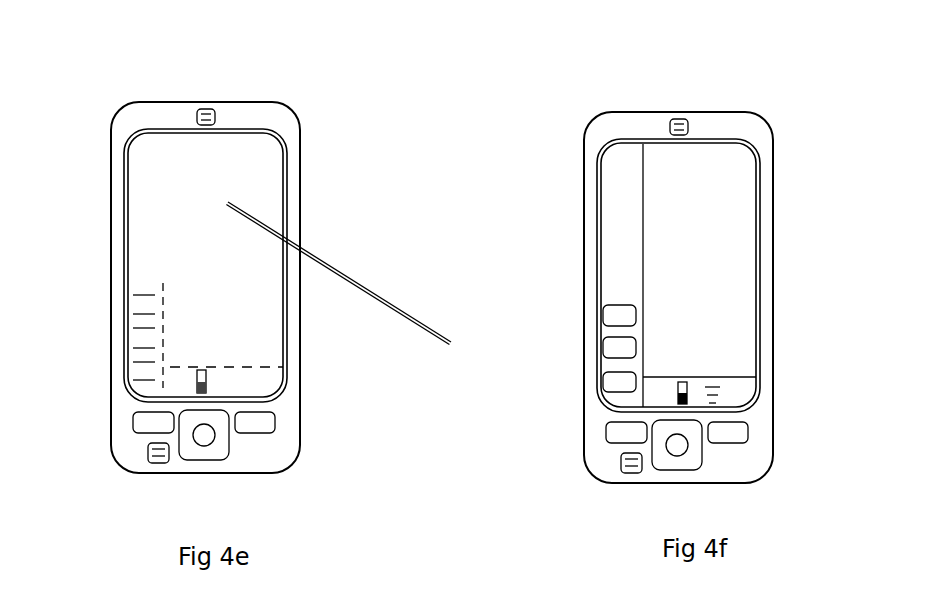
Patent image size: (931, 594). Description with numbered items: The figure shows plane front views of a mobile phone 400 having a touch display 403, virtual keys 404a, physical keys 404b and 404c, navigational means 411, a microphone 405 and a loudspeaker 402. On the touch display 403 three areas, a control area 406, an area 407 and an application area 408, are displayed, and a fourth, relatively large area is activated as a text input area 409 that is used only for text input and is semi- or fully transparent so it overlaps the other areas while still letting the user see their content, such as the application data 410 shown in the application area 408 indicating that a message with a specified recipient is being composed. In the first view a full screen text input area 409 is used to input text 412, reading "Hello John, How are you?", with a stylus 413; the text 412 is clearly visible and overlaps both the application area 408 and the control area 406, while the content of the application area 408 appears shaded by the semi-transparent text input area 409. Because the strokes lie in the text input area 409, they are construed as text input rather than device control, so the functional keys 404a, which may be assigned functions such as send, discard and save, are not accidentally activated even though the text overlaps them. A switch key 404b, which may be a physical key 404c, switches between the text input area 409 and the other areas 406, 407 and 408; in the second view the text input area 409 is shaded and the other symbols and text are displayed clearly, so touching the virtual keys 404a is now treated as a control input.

In FIG. 4E, the mobile phone 400 is at (167, 86).
In FIG. 4F, the mobile phone 400 is at (648, 252).
In FIG. 4E, the loudspeaker 402 is at (205, 107).
In FIG. 4F, the loudspeaker 402 is at (669, 103).
In FIG. 4E, the touch display 403 is at (288, 205).
In FIG. 4F, the touch display 403 is at (715, 275).
In FIG. 4E, the virtual keys 404a is at (124, 310).
In FIG. 4F, the virtual keys 404a is at (570, 348).
In FIG. 4E, the switch key 404b is at (133, 423).
In FIG. 4F, the switch key 404b is at (577, 429).
In FIG. 4E, the physical key 404c is at (275, 428).
In FIG. 4F, the physical key 404c is at (767, 441).
In FIG. 4E, the microphone 405 is at (153, 465).
In FIG. 4F, the microphone 405 is at (605, 497).
In FIG. 4E, the control area 406 is at (124, 255).
In FIG. 4F, the control area 406 is at (627, 275).
In FIG. 4E, the area 407 is at (253, 399).
In FIG. 4F, the area 407 is at (734, 403).
In FIG. 4E, the application area 408 is at (287, 272).
In FIG. 4F, the application area 408 is at (732, 253).
In FIG. 4E, the text input area 409 is at (270, 172).
In FIG. 4F, the text input area 409 is at (735, 175).
In FIG. 4E, the application data 410 is at (168, 153).
In FIG. 4F, the application data 410 is at (628, 156).
In FIG. 4E, the navigational means 411 is at (229, 440).
In FIG. 4F, the navigational means 411 is at (735, 452).
In FIG. 4E, the text 412 is at (150, 196).
In FIG. 4F, the text 412 is at (603, 215).
In FIG. 4E, the stylus 413 is at (372, 295).